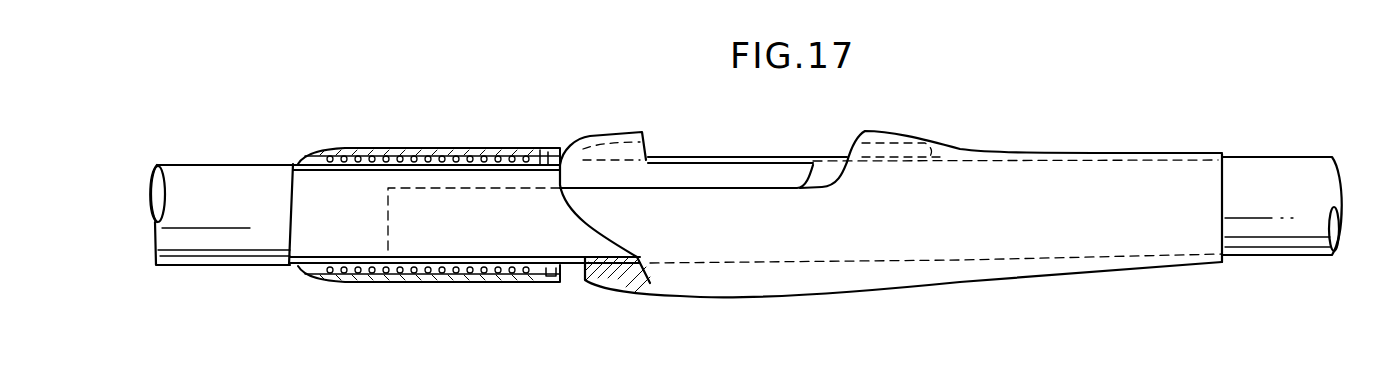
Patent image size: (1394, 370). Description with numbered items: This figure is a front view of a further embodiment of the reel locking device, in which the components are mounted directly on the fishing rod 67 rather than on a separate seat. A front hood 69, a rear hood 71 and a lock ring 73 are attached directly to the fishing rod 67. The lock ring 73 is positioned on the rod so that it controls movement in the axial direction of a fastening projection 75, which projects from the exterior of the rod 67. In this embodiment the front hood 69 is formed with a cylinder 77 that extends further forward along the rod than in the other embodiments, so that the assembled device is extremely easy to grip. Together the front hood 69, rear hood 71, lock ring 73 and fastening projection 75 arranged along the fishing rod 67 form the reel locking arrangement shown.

The fishing rod 67 is at (245, 168).
The front hood 69 is at (990, 283).
The rear hood 71 is at (614, 133).
The lock ring 73 is at (443, 150).
The fastening projection 75 is at (549, 156).
The cylinder 77 is at (1105, 151).